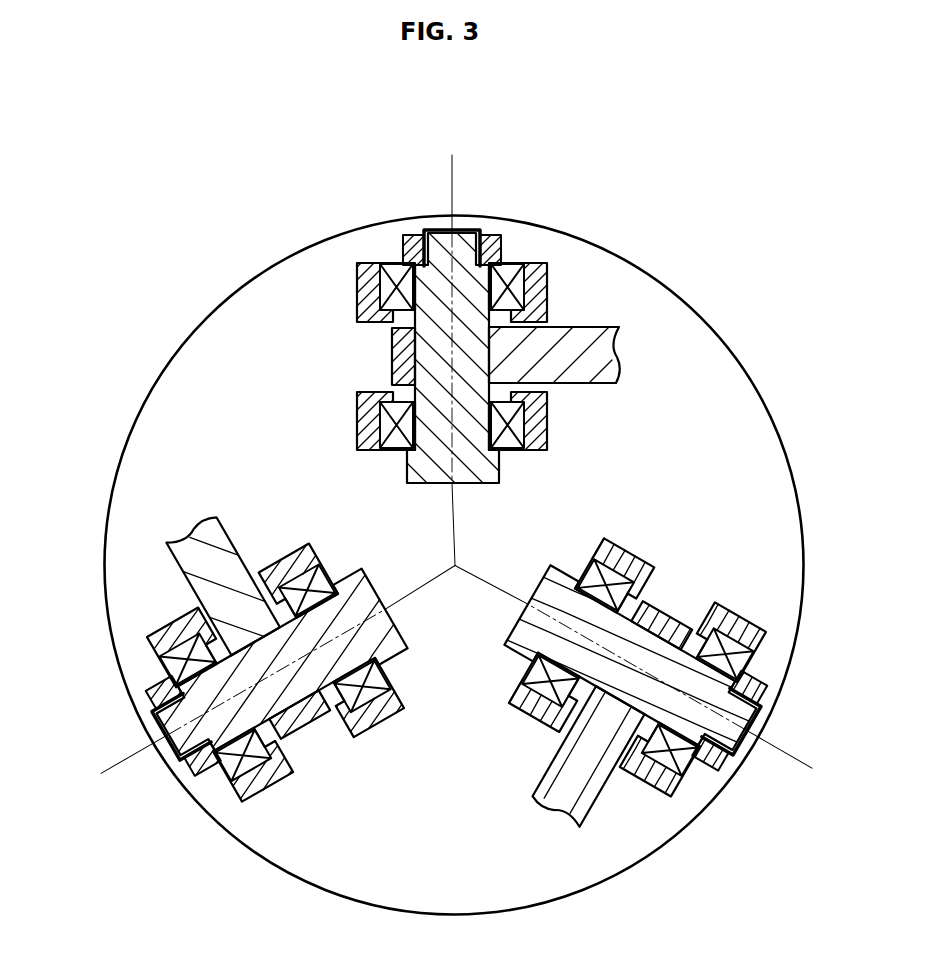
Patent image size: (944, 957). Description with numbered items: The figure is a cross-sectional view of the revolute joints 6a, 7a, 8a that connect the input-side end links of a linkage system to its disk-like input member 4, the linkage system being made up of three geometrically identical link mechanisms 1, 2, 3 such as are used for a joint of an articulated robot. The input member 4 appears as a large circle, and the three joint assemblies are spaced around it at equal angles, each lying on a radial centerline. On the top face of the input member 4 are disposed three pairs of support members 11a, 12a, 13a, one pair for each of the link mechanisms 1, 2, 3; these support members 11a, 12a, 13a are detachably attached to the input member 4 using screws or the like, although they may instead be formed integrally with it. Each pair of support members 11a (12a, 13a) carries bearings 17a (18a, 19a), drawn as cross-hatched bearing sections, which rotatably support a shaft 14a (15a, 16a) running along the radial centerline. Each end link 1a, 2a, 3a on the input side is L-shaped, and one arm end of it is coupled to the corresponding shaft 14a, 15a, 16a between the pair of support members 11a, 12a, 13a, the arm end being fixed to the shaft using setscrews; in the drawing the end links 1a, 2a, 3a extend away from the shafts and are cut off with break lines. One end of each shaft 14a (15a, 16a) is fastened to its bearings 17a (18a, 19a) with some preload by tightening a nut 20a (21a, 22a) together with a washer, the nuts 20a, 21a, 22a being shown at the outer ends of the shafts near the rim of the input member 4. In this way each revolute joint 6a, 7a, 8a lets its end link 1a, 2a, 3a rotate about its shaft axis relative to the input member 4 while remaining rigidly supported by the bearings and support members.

The link mechanism 1 is at (230, 805).
The link mechanism 2 is at (763, 608).
The link mechanism 3 is at (557, 260).
The input member 4 is at (725, 390).
The end link 1a is at (187, 555).
The end link 2a is at (580, 810).
The end link 3a is at (597, 333).
The revolute joint 6a is at (143, 662).
The revolute joint 7a is at (663, 807).
The revolute joint 8a is at (342, 308).
The support members 11a is at (370, 717).
The support members 12a is at (633, 565).
The support members 13a is at (367, 277).
The shaft 14a is at (280, 697).
The shaft 15a is at (652, 648).
The shaft 16a is at (430, 357).
The bearings 17a is at (313, 572).
The bearings 18a is at (528, 662).
The bearings 19a is at (505, 272).
The nut 20a is at (183, 763).
The nut 21a is at (767, 710).
The nut 22a is at (483, 230).